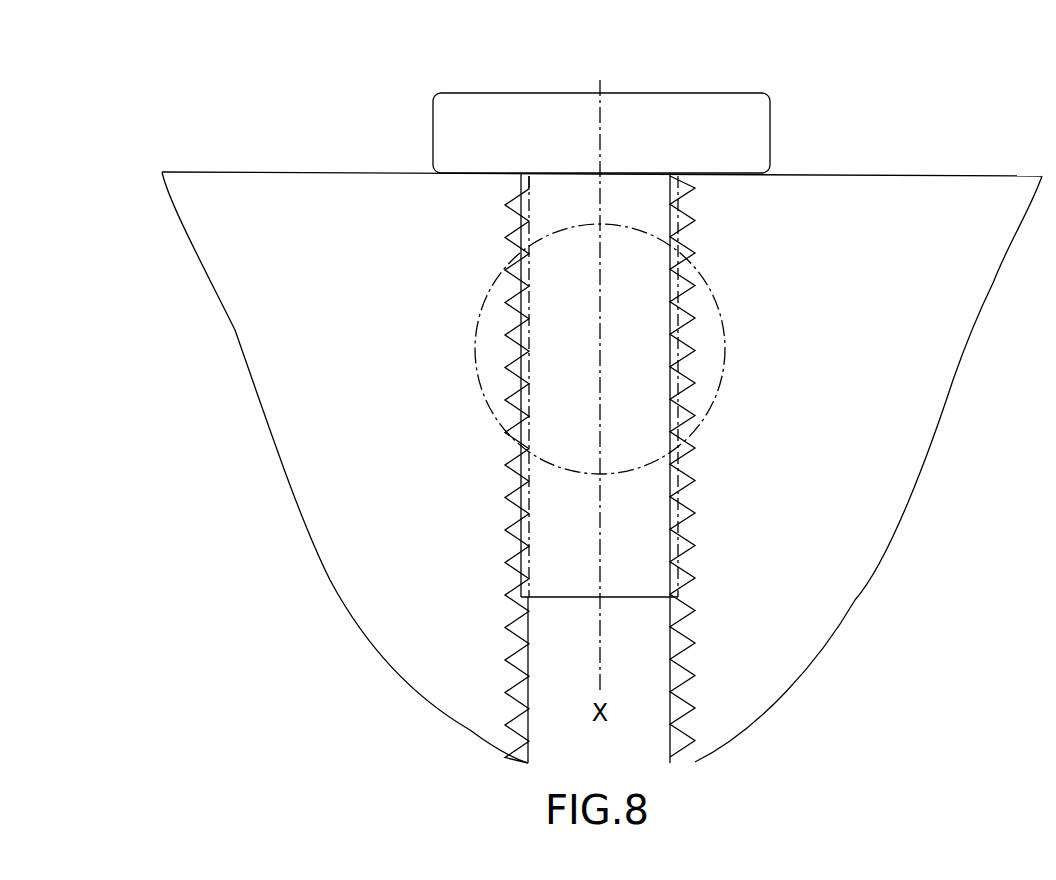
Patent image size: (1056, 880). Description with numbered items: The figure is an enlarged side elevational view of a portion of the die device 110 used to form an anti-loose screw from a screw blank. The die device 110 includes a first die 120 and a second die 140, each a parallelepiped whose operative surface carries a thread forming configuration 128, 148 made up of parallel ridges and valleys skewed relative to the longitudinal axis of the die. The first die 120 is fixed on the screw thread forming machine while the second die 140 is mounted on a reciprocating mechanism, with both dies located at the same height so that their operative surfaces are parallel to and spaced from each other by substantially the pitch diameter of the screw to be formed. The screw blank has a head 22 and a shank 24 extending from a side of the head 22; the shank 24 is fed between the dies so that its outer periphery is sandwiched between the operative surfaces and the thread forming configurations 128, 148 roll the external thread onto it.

The die device 110 is at (975, 153).
The first die 120 is at (277, 170).
The second die 140 is at (898, 178).
The head 22 is at (770, 96).
The thread forming configuration 128 is at (522, 277).
The thread forming configuration 148 is at (673, 263).
The shank 24 is at (578, 590).